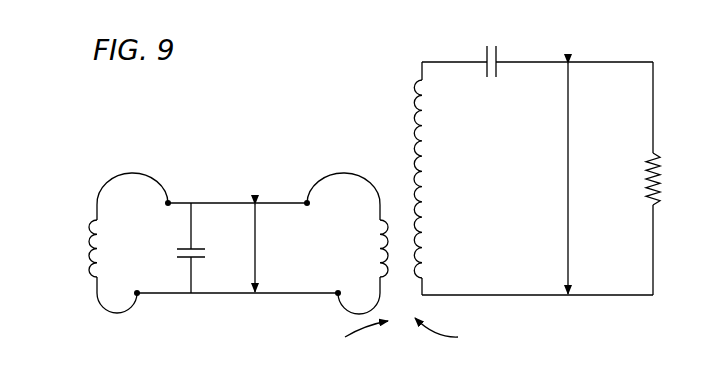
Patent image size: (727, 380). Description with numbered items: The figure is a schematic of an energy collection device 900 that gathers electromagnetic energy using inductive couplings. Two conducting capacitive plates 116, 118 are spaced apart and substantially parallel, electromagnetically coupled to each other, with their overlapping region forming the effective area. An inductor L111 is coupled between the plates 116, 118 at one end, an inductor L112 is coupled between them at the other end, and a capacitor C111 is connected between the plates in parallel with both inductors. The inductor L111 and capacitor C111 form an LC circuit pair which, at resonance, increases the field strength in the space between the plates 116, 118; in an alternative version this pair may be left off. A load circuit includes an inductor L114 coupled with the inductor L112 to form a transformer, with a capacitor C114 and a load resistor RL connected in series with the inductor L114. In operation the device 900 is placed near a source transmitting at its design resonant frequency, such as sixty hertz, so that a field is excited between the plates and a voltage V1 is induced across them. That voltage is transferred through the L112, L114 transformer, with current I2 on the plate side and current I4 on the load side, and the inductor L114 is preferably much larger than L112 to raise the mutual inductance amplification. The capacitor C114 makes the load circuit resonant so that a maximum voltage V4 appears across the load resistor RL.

The energy collection device 900 is at (343, 100).
The first capacitive plate 116 is at (214, 203).
The second capacitive plate 118 is at (233, 293).
The inductor L111 is at (98, 243).
The capacitor C111 is at (163, 248).
The inductor L112 is at (347, 243).
The voltage V1 is at (256, 248).
The current I2 is at (353, 336).
The inductor L114 is at (445, 178).
The capacitor C114 is at (537, 75).
The load resistor RL is at (668, 178).
The voltage V4 is at (569, 178).
The current I4 is at (448, 334).